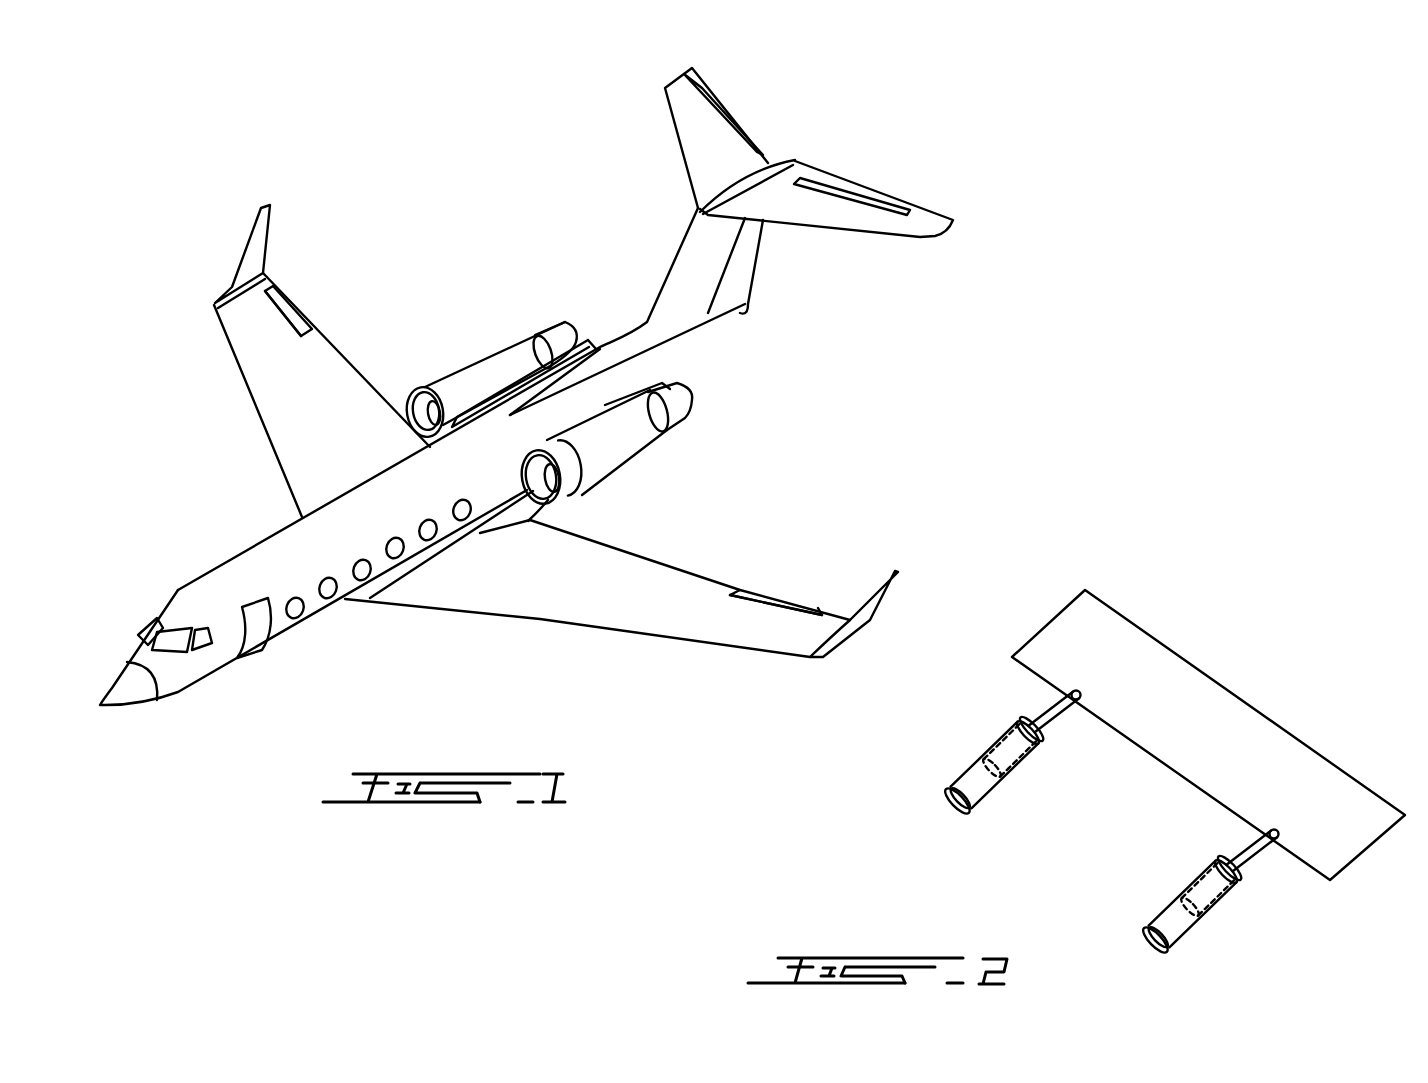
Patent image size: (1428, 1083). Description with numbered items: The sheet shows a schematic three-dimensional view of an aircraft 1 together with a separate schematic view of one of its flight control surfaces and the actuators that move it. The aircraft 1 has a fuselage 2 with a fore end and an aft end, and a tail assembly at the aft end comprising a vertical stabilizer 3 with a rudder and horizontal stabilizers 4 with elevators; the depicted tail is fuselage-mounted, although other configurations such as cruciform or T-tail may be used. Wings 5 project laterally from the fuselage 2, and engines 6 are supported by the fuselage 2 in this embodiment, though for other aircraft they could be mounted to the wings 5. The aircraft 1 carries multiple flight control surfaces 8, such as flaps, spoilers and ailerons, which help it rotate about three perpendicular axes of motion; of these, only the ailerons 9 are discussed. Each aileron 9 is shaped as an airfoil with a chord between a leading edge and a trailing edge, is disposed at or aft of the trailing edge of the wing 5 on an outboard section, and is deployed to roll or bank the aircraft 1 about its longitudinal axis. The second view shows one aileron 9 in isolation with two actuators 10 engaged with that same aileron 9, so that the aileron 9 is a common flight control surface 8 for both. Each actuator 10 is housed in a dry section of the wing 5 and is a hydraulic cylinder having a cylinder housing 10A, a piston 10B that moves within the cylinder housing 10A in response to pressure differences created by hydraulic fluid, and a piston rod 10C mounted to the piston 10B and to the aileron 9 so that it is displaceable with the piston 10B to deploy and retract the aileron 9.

In FIG. 1, the aircraft 1 is at (372, 156).
In FIG. 1, the fuselage 2 is at (214, 541).
In FIG. 1, the vertical stabilizer 3 is at (715, 253).
In FIG. 1, the horizontal stabilizers 4 is at (846, 215).
In FIG. 1, the wings 5 is at (330, 373).
In FIG. 1, the engines 6 is at (497, 360).
In FIG. 1, the flight control surfaces 8 is at (564, 416).
In FIG. 1, the ailerons 9 is at (290, 298).
In FIG. 2, the ailerons 9 is at (1225, 705).
In FIG. 2, the actuators 10 is at (961, 738).
In FIG. 2, the cylinder housing 10A is at (958, 770).
In FIG. 2, the piston 10B is at (1003, 778).
In FIG. 2, the piston rod 10C is at (1042, 715).